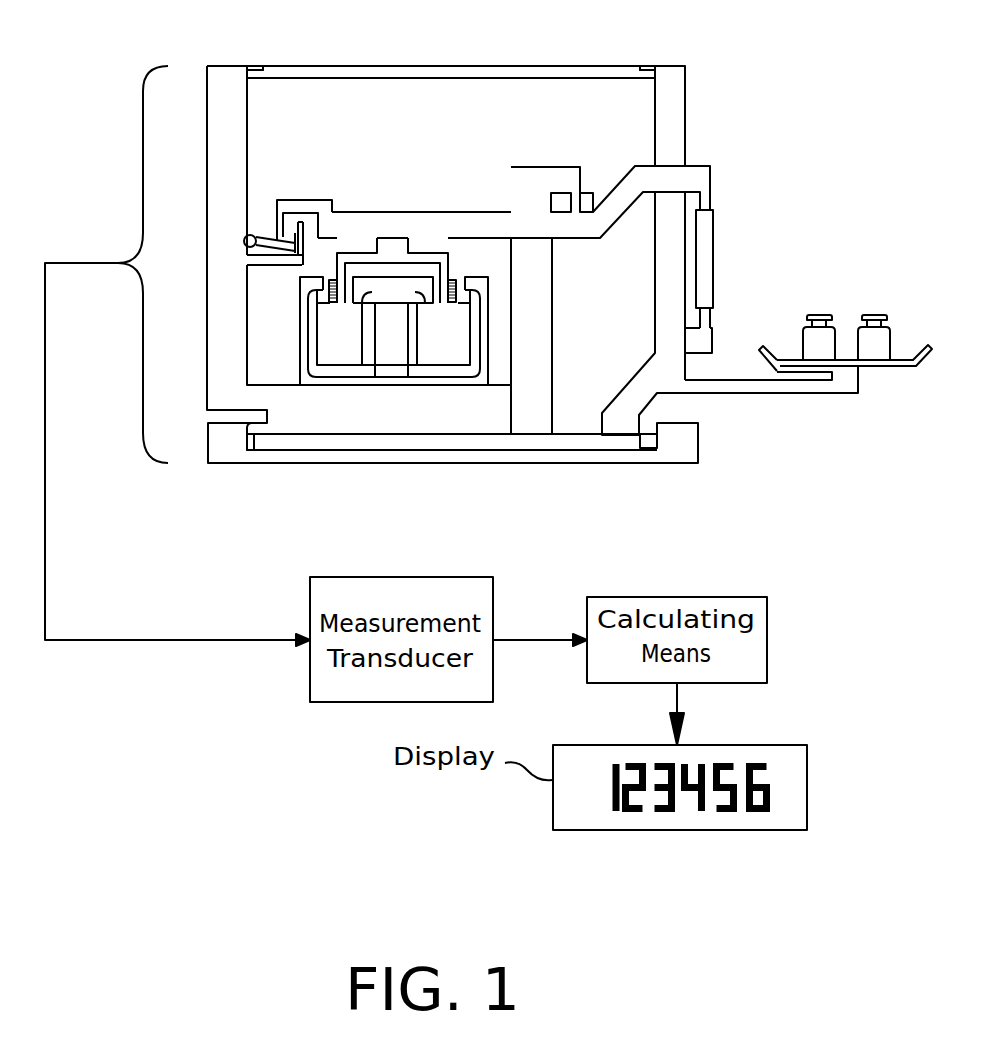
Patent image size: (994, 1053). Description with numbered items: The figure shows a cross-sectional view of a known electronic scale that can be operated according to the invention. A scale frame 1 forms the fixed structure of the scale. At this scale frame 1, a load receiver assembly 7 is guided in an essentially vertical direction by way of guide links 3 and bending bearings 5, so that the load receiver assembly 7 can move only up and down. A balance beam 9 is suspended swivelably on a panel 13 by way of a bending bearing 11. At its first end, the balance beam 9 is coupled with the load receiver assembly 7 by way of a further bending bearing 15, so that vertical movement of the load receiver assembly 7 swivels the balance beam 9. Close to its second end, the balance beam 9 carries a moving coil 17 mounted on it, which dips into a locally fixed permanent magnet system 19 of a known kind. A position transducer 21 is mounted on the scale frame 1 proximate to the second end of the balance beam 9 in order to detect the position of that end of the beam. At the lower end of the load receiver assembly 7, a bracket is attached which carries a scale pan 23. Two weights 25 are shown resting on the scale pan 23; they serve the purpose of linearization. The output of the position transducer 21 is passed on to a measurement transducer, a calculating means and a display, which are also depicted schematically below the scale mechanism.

The scale frame 1 is at (492, 438).
The guide links 3 is at (460, 66).
The bending bearings 5 is at (257, 66).
The load receiver assembly 7 is at (655, 280).
The balance beam 9 is at (445, 212).
The bending bearing 11 is at (585, 205).
The panel 13 is at (553, 348).
The bending bearing 15 is at (708, 200).
The moving coil 17 is at (445, 270).
The permanent magnet system 19 is at (310, 380).
The position transducer 21 is at (277, 232).
The scale pan 23 is at (886, 375).
The weights 25 is at (828, 320).